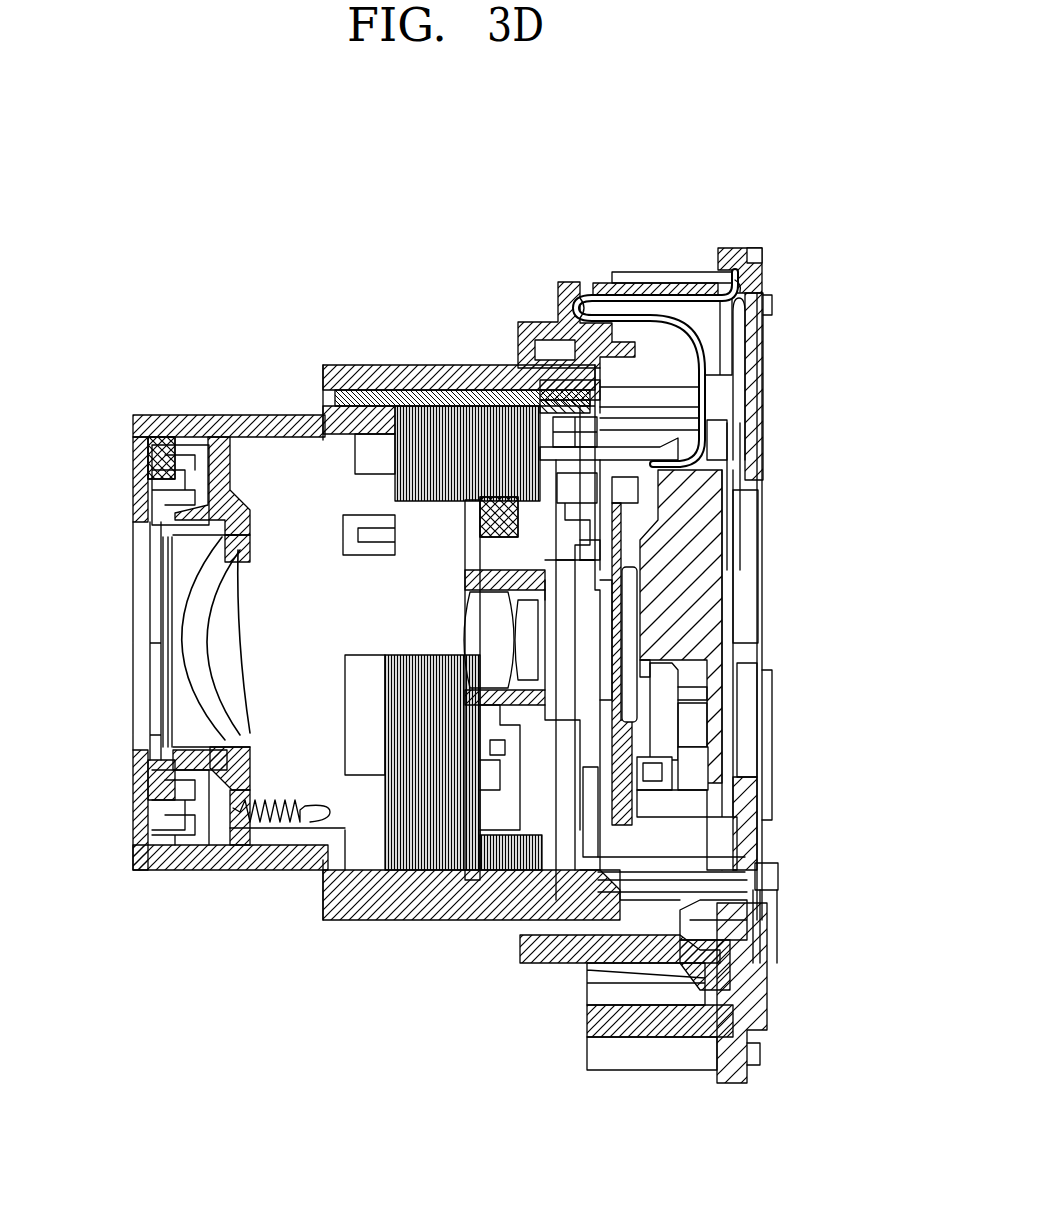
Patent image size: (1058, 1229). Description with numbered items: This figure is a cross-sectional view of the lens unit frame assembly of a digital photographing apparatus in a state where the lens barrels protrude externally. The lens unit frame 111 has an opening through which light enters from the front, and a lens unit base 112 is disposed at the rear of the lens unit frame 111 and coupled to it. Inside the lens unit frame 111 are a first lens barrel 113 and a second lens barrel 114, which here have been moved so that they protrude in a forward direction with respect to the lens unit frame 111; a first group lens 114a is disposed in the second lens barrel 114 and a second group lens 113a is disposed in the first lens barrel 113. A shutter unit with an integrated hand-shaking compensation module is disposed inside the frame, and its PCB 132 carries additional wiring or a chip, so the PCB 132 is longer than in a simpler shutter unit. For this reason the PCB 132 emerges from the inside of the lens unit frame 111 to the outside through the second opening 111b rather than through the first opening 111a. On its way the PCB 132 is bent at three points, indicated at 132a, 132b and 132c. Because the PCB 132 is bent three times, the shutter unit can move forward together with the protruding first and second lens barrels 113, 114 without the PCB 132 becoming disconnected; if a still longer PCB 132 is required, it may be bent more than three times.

The lens unit frame 111 is at (520, 335).
The first opening 111a is at (578, 272).
The second opening 111b is at (734, 272).
The lens unit base 112 is at (763, 404).
The first lens barrel 113 is at (416, 365).
The second group lens 113a is at (470, 635).
The second lens barrel 114 is at (242, 415).
The first group lens 114a is at (215, 655).
The PCB 132 is at (656, 272).
The first bent point of PCB 132a is at (705, 378).
The second bent point of PCB 132b is at (568, 300).
The third bent point of PCB 132c is at (740, 290).